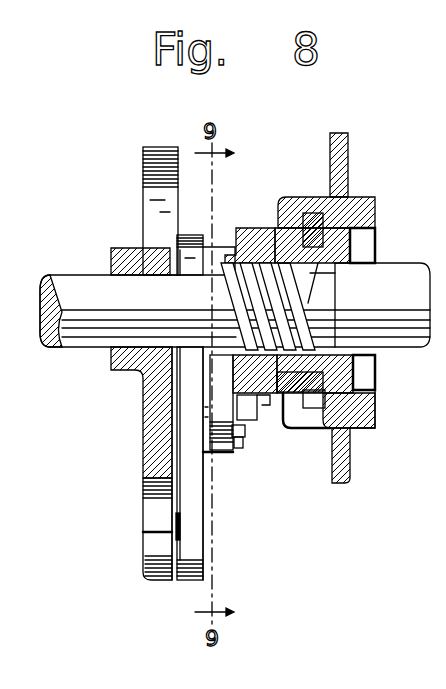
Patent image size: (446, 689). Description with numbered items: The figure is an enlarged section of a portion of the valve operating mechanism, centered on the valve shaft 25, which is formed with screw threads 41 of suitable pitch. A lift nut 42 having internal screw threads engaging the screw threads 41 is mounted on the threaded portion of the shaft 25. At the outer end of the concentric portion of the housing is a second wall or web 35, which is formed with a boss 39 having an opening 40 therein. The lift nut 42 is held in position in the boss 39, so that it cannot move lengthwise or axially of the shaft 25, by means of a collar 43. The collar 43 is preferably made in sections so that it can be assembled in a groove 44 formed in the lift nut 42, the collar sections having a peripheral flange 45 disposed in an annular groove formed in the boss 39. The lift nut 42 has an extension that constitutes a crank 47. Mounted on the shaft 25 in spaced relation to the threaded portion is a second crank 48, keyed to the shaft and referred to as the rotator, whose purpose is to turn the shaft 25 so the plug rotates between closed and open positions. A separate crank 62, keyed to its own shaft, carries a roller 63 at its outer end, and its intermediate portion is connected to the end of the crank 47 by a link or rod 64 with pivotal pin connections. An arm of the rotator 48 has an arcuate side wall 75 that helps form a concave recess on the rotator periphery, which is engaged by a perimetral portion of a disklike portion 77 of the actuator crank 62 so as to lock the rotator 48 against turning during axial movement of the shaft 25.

The valve shaft 25 is at (235, 305).
The second wall or web 35 is at (340, 150).
The boss 39 is at (365, 205).
The opening 40 is at (362, 240).
The screw threads 41 is at (288, 425).
The lift nut 42 is at (248, 237).
The collar 43 is at (291, 233).
The groove 44 is at (350, 368).
The peripheral flange 45 is at (313, 217).
The crank 47 is at (252, 418).
The second crank (rotator) 48 is at (155, 435).
The crank 62 is at (190, 577).
The roller 63 is at (150, 562).
The link or rod 64 is at (218, 455).
The arcuate side wall 75 is at (152, 490).
The disklike portion 77 is at (155, 183).